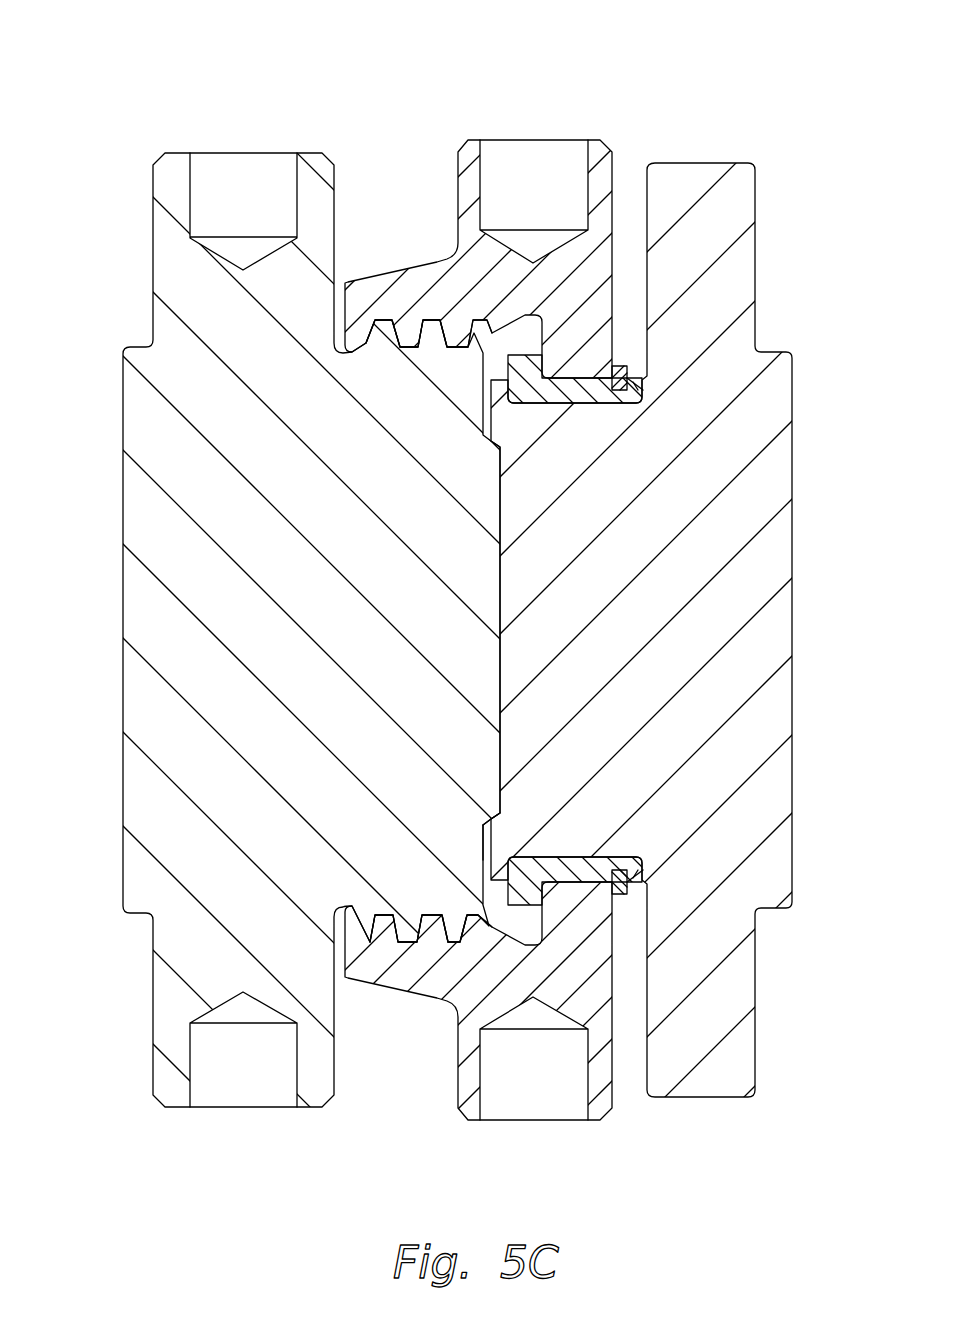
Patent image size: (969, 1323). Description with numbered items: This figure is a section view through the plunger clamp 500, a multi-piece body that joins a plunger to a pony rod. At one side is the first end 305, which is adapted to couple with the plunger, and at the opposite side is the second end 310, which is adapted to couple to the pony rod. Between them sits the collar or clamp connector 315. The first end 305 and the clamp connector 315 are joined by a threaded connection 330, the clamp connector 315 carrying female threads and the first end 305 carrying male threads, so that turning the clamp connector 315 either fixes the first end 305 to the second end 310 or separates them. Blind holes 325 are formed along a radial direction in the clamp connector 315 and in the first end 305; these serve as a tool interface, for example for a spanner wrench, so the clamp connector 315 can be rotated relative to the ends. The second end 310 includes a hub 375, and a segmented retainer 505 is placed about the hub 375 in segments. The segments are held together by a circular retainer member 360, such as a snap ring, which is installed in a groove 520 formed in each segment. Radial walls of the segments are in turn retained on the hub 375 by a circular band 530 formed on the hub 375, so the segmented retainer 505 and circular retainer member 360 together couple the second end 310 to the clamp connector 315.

The plunger clamp 500 is at (150, 33).
The first end 305 is at (122, 611).
The second end 310 is at (793, 610).
The clamp connector 315 is at (458, 198).
The blind holes 325 is at (232, 165).
The threaded connection 330 is at (428, 361).
The segmented retainer 505 is at (587, 396).
The groove 520 is at (645, 379).
The circular band 530 is at (482, 850).
The hub 375 is at (570, 888).
The circular retainer member 360 is at (628, 888).